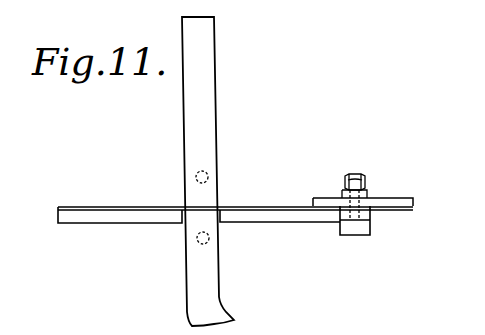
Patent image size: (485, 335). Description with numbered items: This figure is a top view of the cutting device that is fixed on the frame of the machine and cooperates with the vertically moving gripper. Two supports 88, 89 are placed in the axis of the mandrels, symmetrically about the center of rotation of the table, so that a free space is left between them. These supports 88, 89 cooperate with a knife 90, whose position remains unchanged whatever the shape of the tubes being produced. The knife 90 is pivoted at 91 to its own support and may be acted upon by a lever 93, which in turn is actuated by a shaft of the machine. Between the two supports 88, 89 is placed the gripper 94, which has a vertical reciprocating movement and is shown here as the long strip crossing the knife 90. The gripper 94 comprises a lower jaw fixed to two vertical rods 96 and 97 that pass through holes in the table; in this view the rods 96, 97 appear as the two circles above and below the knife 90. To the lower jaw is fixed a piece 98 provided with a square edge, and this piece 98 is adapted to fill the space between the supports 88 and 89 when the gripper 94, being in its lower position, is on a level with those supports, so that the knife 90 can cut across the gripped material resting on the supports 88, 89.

The support 88 is at (283, 231).
The support 89 is at (108, 228).
The knife 90 is at (278, 207).
The pivot 91 is at (354, 200).
The lever 93 is at (362, 227).
The gripper 94 is at (207, 110).
The vertical rod 96 is at (195, 175).
The vertical rod 97 is at (208, 243).
The piece 98 is at (202, 212).